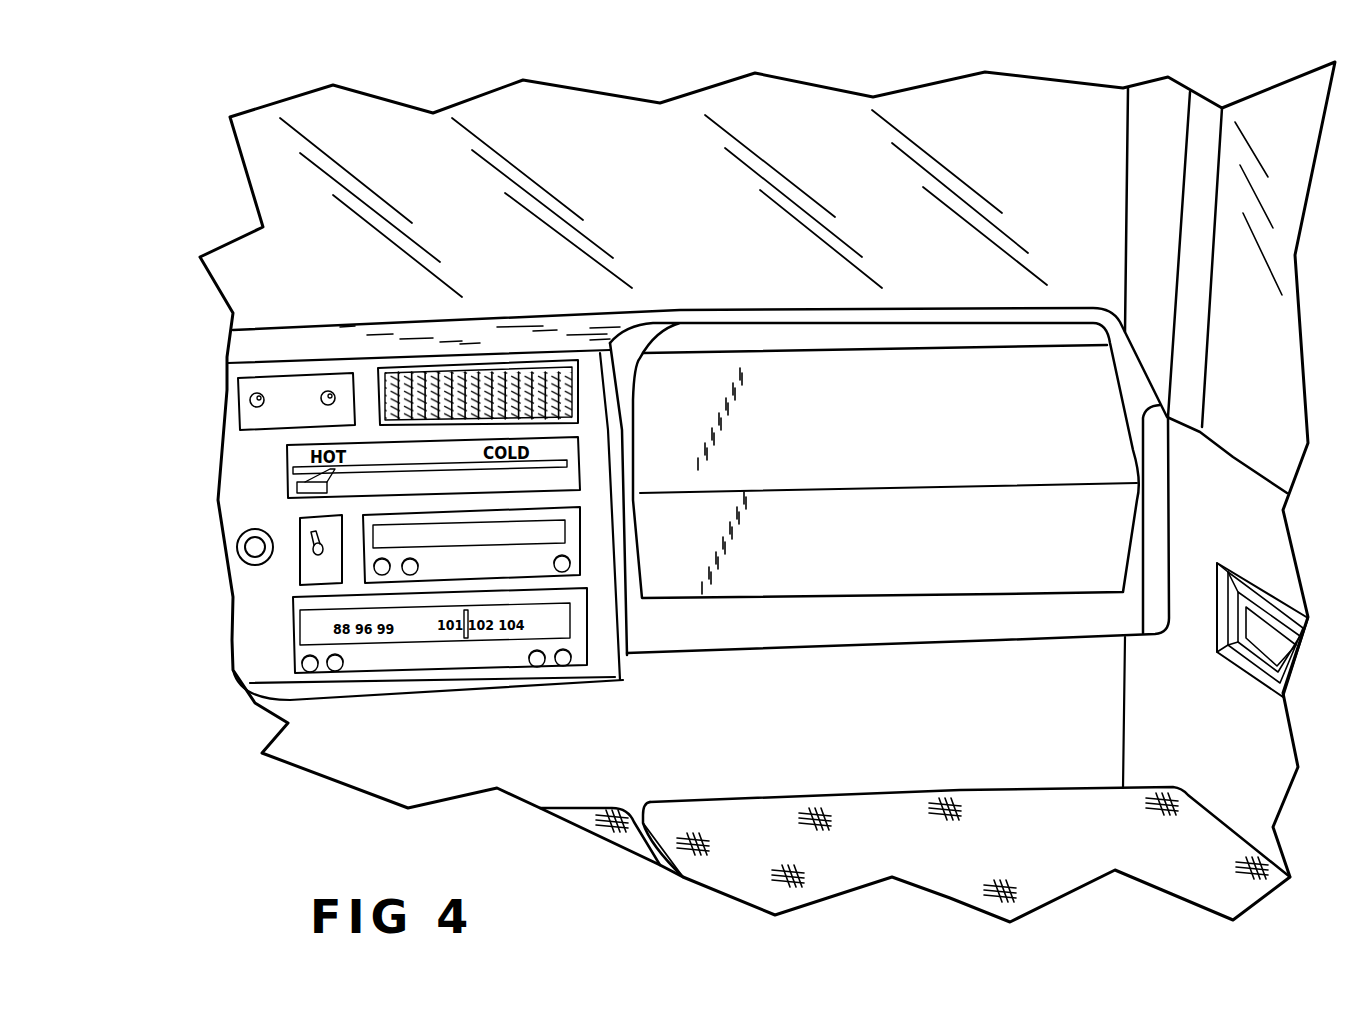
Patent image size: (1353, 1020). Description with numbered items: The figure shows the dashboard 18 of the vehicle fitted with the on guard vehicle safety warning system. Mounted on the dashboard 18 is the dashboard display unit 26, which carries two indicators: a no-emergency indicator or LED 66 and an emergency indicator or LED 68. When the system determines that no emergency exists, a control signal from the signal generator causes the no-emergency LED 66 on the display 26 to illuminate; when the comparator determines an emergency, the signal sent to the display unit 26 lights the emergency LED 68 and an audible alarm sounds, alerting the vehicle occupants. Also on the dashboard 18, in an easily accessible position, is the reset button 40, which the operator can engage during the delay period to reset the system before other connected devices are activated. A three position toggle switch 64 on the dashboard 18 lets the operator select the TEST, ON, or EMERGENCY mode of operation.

The dashboard 18 is at (900, 332).
The dashboard display unit 26 is at (238, 421).
The reset button 40 is at (237, 541).
The three position toggle switch 64 is at (312, 552).
The no emergency indicator 66 is at (259, 393).
The emergency indicator 68 is at (331, 391).